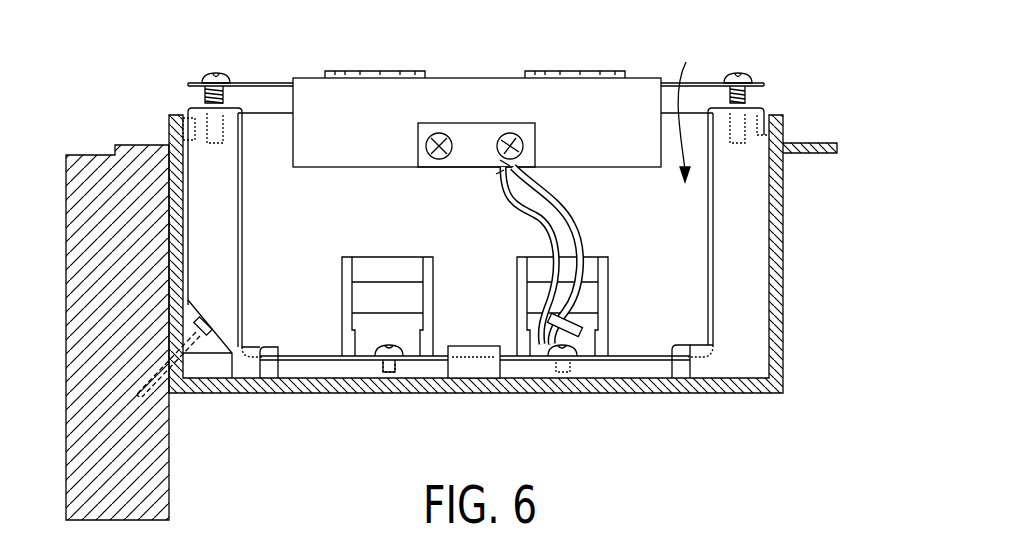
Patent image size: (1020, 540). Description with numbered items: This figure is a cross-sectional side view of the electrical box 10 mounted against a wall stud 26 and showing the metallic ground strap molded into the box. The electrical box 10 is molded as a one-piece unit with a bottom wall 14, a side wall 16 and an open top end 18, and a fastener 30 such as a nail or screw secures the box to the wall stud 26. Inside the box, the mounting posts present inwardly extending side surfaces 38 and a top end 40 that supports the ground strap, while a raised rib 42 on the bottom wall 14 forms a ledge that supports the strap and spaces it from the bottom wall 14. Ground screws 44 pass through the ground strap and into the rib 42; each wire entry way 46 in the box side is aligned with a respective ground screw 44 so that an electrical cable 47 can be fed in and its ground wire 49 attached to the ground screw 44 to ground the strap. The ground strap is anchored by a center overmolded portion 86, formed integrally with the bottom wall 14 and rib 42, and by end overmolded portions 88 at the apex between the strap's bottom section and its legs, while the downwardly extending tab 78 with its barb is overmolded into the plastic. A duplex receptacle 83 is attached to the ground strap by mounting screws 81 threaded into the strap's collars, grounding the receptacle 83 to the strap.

The electrical box 10 is at (737, 401).
The bottom wall 14 is at (505, 394).
The side wall 16 is at (785, 305).
The open top end 18 is at (686, 113).
The wall stud 26 is at (66, 181).
The fastener 30 is at (206, 321).
The side surfaces 38 is at (207, 212).
The top end 40 is at (175, 115).
The raised rib 42 is at (300, 368).
The ground screw 44 is at (379, 356).
The wire entry way 46 is at (382, 298).
The electrical cable 47 is at (502, 222).
The ground wire 49 is at (530, 320).
The downwardly extending tab 78 is at (183, 130).
The mounting screw 81 is at (215, 72).
The duplex receptacle 83 is at (456, 78).
The center overmolded portion 86 is at (470, 366).
The end overmolded portion 88 is at (273, 352).